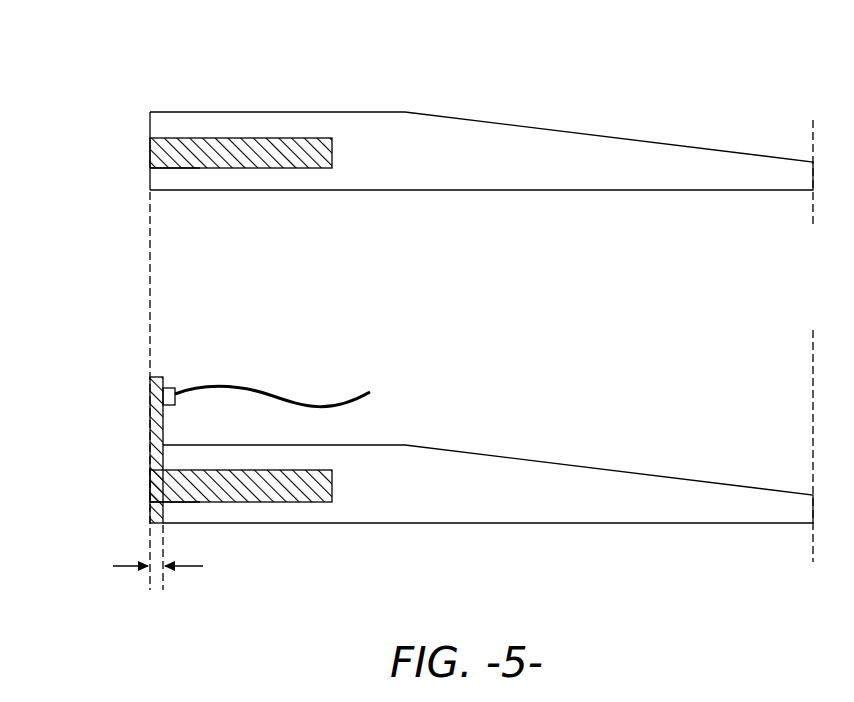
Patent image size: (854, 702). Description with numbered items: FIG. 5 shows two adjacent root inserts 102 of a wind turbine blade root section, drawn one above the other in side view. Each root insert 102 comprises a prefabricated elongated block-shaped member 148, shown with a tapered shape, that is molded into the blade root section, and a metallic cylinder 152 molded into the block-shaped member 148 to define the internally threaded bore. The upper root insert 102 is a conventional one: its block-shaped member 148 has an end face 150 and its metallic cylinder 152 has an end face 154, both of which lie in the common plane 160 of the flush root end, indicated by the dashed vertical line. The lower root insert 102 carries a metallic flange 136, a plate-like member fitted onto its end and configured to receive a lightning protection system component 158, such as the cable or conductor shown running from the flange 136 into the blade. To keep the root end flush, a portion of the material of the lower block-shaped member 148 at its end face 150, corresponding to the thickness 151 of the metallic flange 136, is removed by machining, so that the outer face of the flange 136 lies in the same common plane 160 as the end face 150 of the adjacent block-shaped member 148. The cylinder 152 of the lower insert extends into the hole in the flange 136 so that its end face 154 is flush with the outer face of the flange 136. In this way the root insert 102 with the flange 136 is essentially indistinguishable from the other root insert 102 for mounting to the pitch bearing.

The root insert 102 is at (434, 329).
The metallic flange 136 is at (150, 425).
The block-shaped member 148 is at (457, 175).
The end face of block-shaped member 150 is at (150, 127).
The thickness of metallic flange 151 is at (122, 566).
The metallic cylinder 152 is at (283, 138).
The end face of metallic cylinder 154 is at (150, 152).
The lightning protection system component 158 is at (330, 403).
The common plane 160 is at (150, 275).